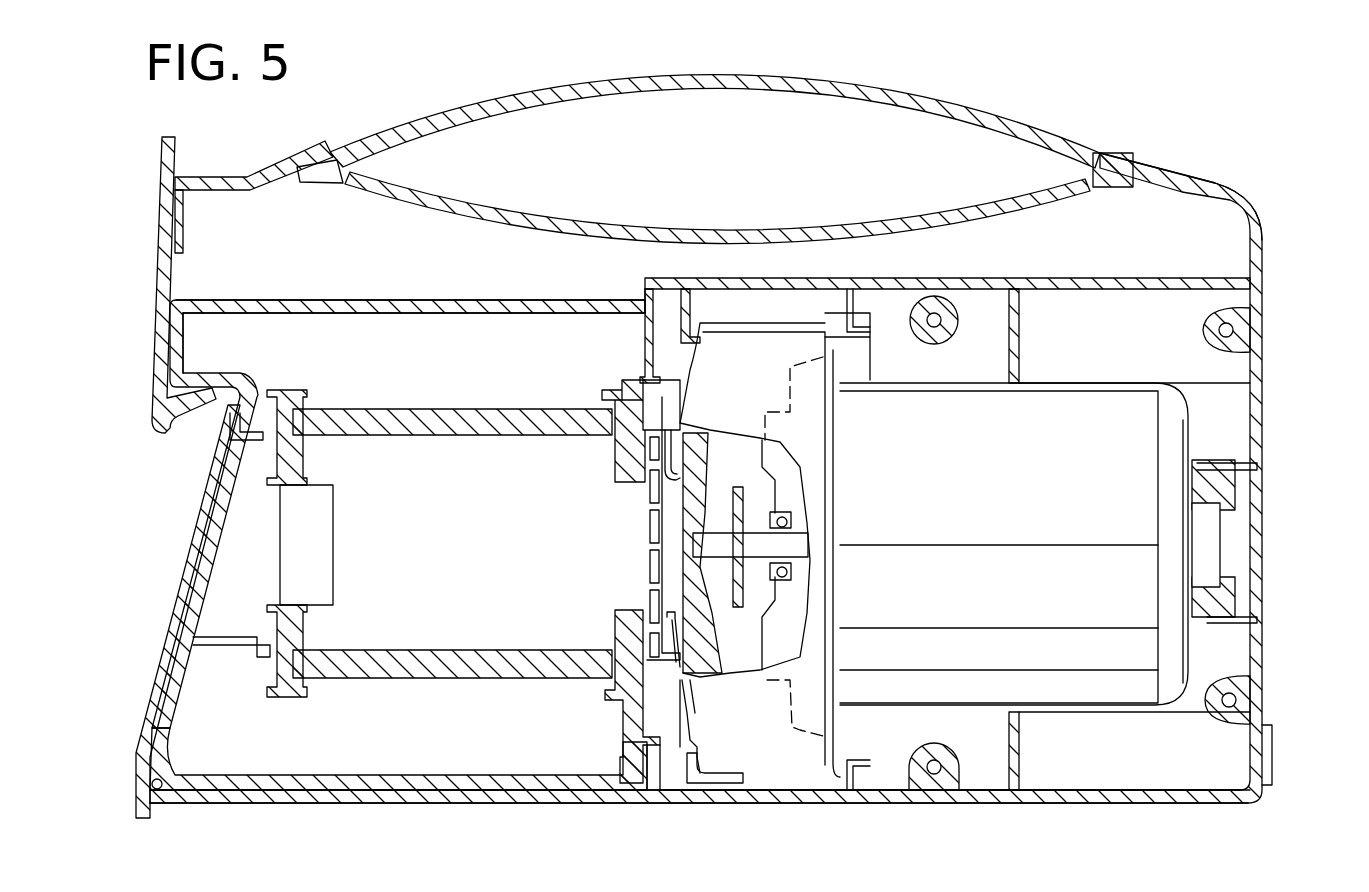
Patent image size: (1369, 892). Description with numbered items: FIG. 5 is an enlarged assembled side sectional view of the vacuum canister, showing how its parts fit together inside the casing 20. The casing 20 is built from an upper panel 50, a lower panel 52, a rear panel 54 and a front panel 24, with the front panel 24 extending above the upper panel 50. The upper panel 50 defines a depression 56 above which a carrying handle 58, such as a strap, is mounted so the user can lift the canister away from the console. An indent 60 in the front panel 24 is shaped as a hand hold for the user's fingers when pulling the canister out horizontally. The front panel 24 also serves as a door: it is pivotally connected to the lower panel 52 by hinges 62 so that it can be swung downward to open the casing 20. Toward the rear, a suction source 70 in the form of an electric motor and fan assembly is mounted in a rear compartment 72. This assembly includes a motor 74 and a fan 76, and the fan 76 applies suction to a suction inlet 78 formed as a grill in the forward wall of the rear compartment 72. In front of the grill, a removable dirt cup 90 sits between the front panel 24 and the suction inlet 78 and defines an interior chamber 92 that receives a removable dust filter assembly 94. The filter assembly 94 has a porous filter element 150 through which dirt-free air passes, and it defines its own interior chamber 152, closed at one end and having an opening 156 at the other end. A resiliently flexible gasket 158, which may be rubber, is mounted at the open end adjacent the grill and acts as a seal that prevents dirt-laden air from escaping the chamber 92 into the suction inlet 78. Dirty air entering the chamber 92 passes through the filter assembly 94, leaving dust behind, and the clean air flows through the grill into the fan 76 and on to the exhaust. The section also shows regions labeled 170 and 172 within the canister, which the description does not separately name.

The casing 20 is at (1263, 242).
The front panel 24 is at (160, 240).
The upper panel 50 is at (1175, 167).
The lower panel 52 is at (770, 806).
The rear panel 54 is at (1263, 522).
The depression 56 is at (788, 228).
The carrying handle 58 is at (985, 125).
The indent 60 is at (200, 445).
The hinges 62 is at (162, 792).
The suction source 70 is at (850, 406).
The rear compartment 72 is at (810, 319).
The motor 74 is at (1105, 385).
The fan 76 is at (690, 578).
The suction inlet 78 is at (646, 527).
The dirt cup 90 is at (300, 300).
The interior chamber 92 is at (275, 749).
The dust filter assembly 94 is at (370, 662).
The filter element 150 is at (355, 405).
The interior chamber 152 is at (480, 542).
The opening 156 is at (612, 631).
The gasket 158 is at (625, 405).
The upper chamber 170 is at (354, 343).
The cover cavity 172 is at (552, 269).